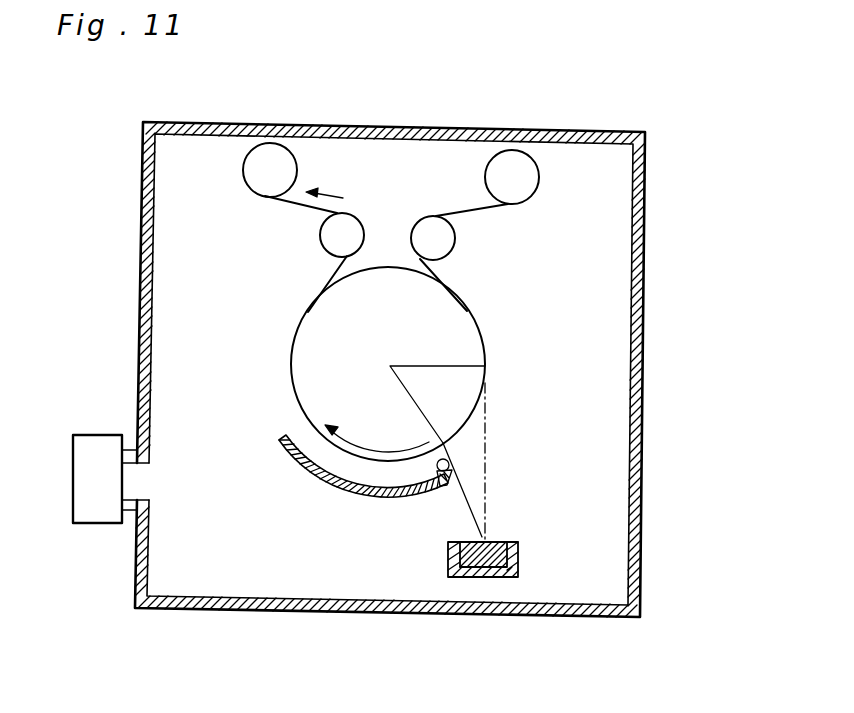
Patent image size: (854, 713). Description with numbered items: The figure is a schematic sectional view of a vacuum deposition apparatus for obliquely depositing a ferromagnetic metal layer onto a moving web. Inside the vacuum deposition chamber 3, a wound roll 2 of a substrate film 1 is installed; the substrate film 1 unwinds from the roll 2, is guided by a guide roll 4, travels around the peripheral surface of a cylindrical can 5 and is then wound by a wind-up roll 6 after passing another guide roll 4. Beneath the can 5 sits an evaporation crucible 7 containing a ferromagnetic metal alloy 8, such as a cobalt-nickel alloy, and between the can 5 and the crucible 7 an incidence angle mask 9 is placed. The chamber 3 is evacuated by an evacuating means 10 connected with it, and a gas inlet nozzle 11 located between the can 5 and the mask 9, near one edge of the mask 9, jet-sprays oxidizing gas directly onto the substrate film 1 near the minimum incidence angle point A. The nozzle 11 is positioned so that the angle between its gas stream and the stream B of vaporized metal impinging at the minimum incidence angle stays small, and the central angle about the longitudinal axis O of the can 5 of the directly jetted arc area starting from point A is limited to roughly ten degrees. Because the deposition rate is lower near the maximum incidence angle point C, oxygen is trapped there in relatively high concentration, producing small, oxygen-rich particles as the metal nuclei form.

The substrate film 1 is at (438, 270).
The wound roll 2 is at (528, 182).
The vacuum deposition chamber 3 is at (645, 287).
The guide roll 4 is at (328, 236).
The cylindrical can 5 is at (467, 325).
The wind-up roll 6 is at (255, 167).
The evaporation crucible 7 is at (488, 577).
The ferromagnetic metal alloy 8 is at (520, 547).
The incidence angle mask 9 is at (307, 470).
The evacuating means 10 is at (97, 512).
The gas inlet nozzle 11 is at (430, 487).
The longitudinal axis O is at (424, 391).
The minimum incidence angle point A is at (443, 443).
The stream of vaporized metal B is at (472, 460).
The maximum incidence angle point C is at (485, 366).